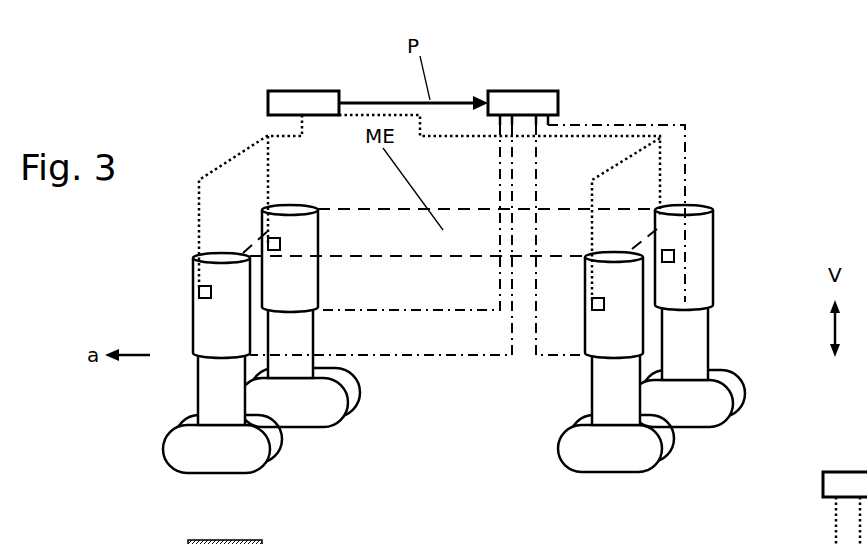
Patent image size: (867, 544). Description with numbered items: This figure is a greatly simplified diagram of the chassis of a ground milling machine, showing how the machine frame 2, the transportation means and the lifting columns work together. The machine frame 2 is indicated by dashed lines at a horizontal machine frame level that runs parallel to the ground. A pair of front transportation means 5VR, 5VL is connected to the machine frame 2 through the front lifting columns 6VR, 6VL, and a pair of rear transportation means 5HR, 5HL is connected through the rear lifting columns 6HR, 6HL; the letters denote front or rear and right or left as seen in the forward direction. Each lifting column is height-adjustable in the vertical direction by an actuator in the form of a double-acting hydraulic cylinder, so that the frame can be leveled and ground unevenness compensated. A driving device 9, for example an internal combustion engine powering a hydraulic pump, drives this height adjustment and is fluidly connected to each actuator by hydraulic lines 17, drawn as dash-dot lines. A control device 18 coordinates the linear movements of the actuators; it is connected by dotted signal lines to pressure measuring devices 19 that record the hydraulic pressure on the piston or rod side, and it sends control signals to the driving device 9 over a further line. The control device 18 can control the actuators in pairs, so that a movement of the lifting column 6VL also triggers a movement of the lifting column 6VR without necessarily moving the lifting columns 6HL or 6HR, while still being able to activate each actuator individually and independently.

The machine frame 2 is at (368, 210).
The front left transportation means 5VL is at (200, 460).
The front right transportation means 5VR is at (316, 405).
The rear left transportation means 5HL is at (628, 448).
The rear right transportation means 5HR is at (708, 403).
The front left lifting column 6VL is at (212, 368).
The front right lifting column 6VR is at (303, 333).
The rear left lifting column 6HL is at (605, 380).
The rear right lifting column 6HR is at (700, 343).
The driving device 9 is at (535, 103).
The hydraulic lines 17 is at (628, 123).
The control device 18 is at (317, 100).
The pressure measuring devices 19 is at (270, 245).